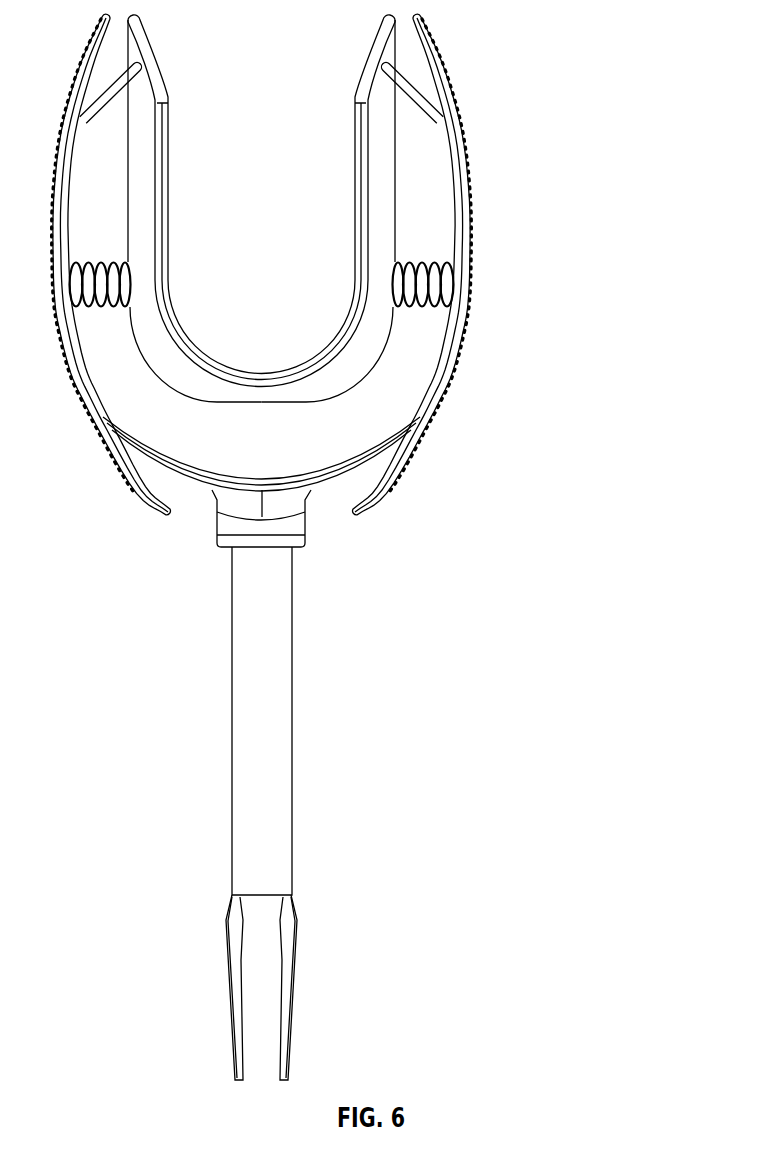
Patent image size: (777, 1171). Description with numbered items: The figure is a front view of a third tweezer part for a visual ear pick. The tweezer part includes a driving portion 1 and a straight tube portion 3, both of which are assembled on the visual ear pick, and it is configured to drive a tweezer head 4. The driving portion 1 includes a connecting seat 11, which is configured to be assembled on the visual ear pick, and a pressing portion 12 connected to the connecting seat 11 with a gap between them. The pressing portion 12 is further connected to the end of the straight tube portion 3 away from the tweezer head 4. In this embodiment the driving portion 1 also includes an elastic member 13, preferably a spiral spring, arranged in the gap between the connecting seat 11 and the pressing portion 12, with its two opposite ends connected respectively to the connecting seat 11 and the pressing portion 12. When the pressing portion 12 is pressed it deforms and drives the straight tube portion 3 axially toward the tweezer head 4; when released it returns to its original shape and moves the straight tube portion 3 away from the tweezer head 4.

The driving portion 1 is at (371, 260).
The connecting seat 11 is at (377, 168).
The pressing portion 12 is at (462, 175).
The elastic member 13 is at (433, 260).
The straight tube portion 3 is at (273, 730).
The tweezer head 4 is at (290, 963).